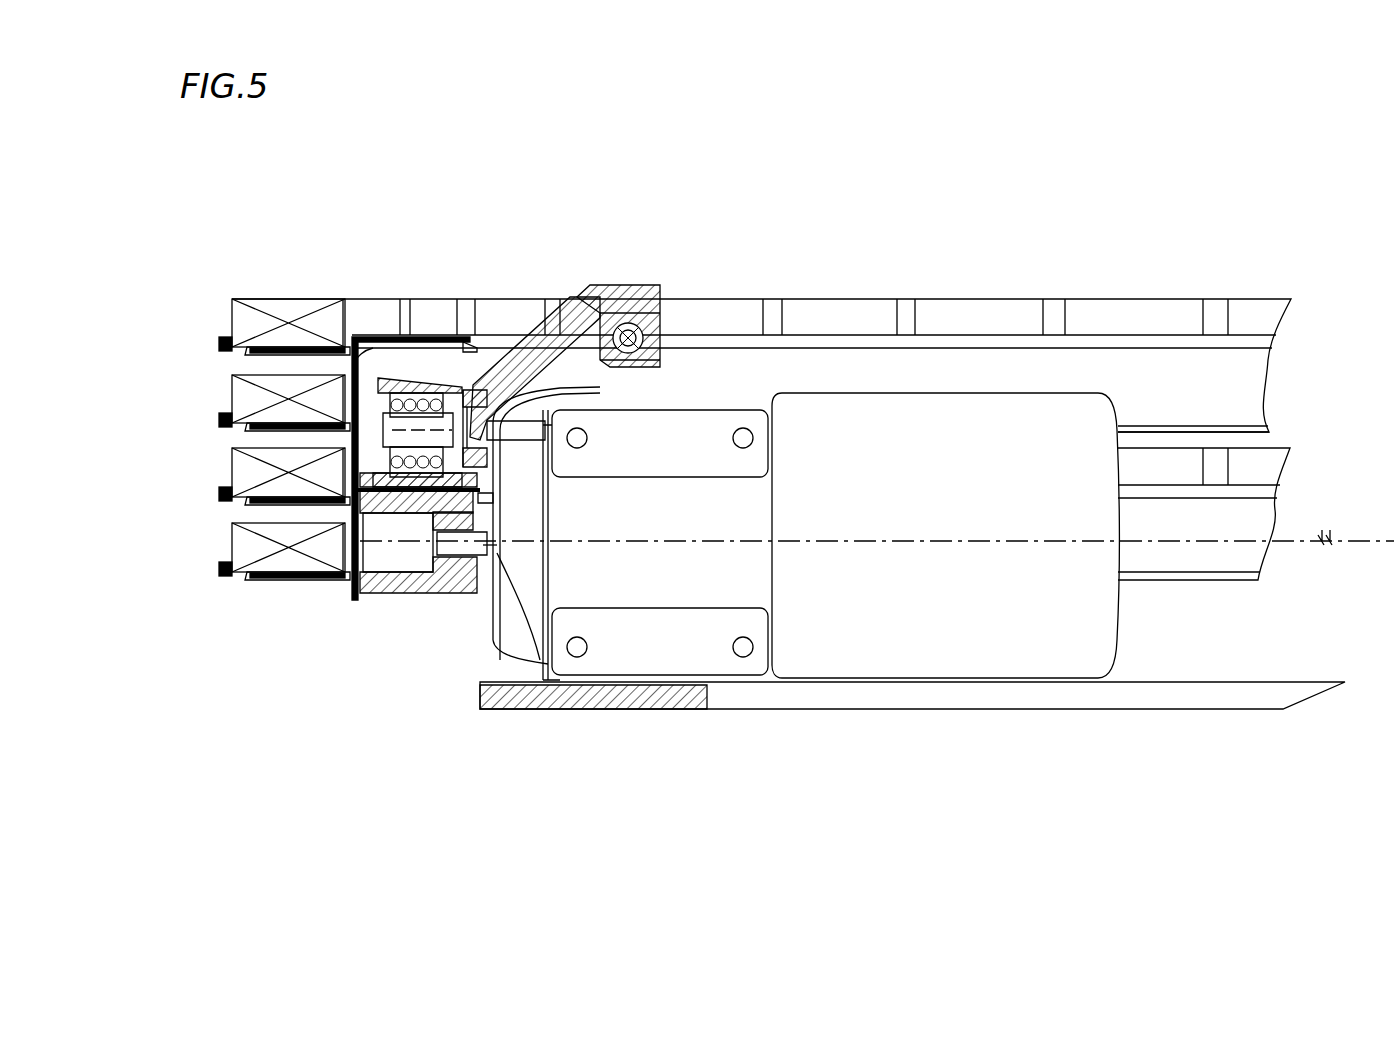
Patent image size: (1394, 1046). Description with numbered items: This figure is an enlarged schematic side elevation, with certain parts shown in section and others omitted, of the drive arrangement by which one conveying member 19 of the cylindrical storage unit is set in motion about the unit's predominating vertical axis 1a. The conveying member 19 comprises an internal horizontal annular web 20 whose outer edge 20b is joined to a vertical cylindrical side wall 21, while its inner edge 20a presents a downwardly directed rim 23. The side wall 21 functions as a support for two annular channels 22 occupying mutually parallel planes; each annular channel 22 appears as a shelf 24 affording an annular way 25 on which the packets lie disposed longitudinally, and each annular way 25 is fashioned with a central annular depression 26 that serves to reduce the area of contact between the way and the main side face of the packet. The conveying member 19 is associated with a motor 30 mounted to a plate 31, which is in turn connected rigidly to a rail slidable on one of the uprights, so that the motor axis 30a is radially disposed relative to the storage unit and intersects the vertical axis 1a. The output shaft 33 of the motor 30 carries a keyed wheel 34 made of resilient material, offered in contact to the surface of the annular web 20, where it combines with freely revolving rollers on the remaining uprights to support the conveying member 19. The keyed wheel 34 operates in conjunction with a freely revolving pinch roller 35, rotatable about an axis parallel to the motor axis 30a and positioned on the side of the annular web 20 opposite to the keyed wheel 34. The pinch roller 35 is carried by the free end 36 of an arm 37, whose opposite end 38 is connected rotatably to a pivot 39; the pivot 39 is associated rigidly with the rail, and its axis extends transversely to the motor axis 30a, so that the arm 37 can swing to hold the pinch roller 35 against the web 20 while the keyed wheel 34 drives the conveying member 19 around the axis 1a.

The vertical axis 1a is at (1393, 268).
The conveying member 19 is at (236, 603).
The internal horizontal annular web 20 is at (418, 500).
The inner edge 20a is at (490, 495).
The outer edge 20b is at (381, 508).
The vertical cylindrical side wall 21 is at (365, 335).
The annular channel 22 is at (233, 449).
The downwardly directed rim 23 is at (457, 345).
The shelf 24 is at (228, 336).
The annular way 25 is at (232, 353).
The central annular depression 26 is at (291, 423).
The motor 30 is at (962, 657).
The motor axis 30a is at (1332, 530).
The plate 31 is at (707, 633).
The output shaft 33 is at (546, 430).
The keyed wheel 34 is at (437, 600).
The pinch roller 35 is at (416, 395).
The free end 36 is at (547, 390).
The arm 37 is at (528, 338).
The opposite end 38 is at (622, 285).
The pivot 39 is at (660, 297).